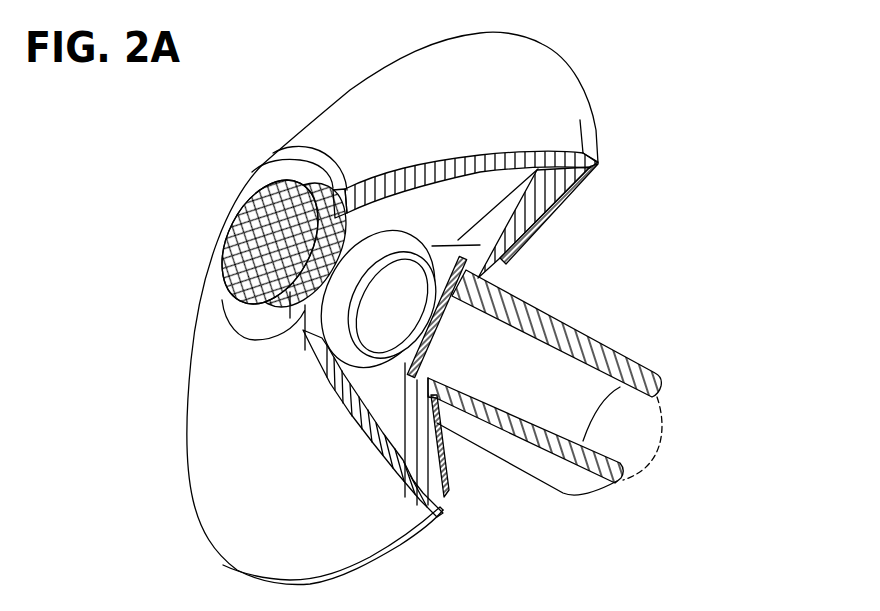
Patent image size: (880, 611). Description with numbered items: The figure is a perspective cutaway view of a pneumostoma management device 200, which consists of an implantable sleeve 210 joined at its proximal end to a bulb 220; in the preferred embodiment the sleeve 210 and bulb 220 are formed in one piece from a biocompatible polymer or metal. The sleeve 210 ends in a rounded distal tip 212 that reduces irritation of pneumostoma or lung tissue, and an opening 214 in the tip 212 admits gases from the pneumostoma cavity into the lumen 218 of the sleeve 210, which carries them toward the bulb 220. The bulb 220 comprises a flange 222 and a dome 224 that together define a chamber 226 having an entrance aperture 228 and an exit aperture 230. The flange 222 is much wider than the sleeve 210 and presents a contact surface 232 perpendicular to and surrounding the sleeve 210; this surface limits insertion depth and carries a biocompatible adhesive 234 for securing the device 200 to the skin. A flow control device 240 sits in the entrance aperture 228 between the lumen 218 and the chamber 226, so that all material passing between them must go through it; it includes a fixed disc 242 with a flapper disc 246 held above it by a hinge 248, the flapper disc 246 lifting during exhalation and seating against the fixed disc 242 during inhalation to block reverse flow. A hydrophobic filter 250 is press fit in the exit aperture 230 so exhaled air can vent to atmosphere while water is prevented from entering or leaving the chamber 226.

The pneumostoma management device 200 is at (479, 308).
The implantable sleeve 210 is at (519, 353).
The rounded distal tip 212 is at (660, 392).
The opening 214 is at (640, 442).
The lumen 218 is at (569, 388).
The bulb 220 is at (425, 308).
The flange 222 is at (537, 171).
The dome 224 is at (280, 484).
The chamber 226 is at (462, 200).
The entrance aperture 228 is at (345, 296).
The exit aperture 230 is at (239, 248).
The contact surface 232 is at (592, 175).
The biocompatible adhesive 234 is at (537, 237).
The flow control device 240 is at (441, 334).
The fixed disc 242 is at (445, 316).
The flapper disc 246 is at (410, 318).
The hinge 248 is at (480, 245).
The hydrophobic filter 250 is at (232, 224).